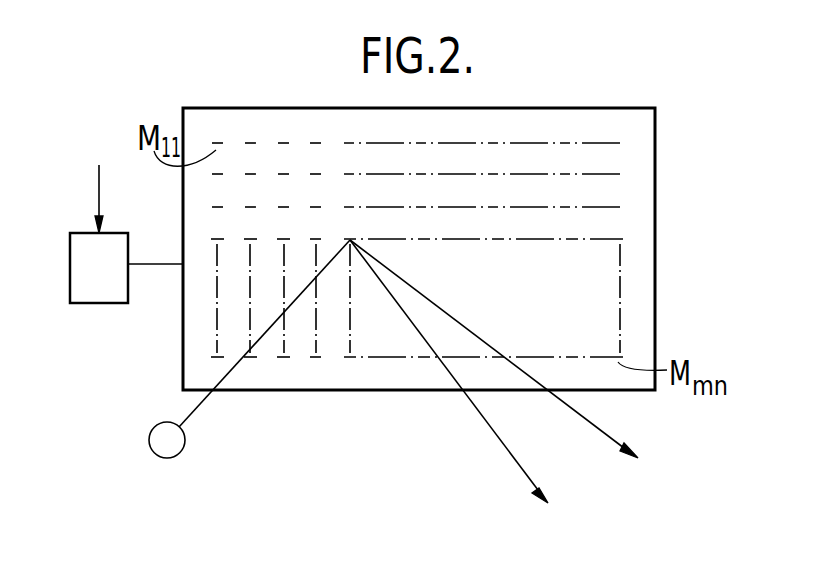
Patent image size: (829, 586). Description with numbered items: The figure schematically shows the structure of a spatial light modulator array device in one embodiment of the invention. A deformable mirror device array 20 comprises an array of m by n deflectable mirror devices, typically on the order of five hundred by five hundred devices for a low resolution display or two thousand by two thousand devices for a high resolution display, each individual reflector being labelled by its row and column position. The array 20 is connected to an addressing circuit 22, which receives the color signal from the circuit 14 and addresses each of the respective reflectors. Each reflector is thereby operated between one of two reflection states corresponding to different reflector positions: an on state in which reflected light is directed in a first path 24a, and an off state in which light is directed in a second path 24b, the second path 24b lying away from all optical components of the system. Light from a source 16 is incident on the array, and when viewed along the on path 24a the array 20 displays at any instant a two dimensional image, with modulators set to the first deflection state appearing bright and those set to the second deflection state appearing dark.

The circuit 14 is at (99, 165).
The light source 16 is at (167, 441).
The array 20 is at (193, 108).
The addressing circuit 22 is at (95, 304).
The first path 24a is at (531, 483).
The second path 24b is at (622, 448).